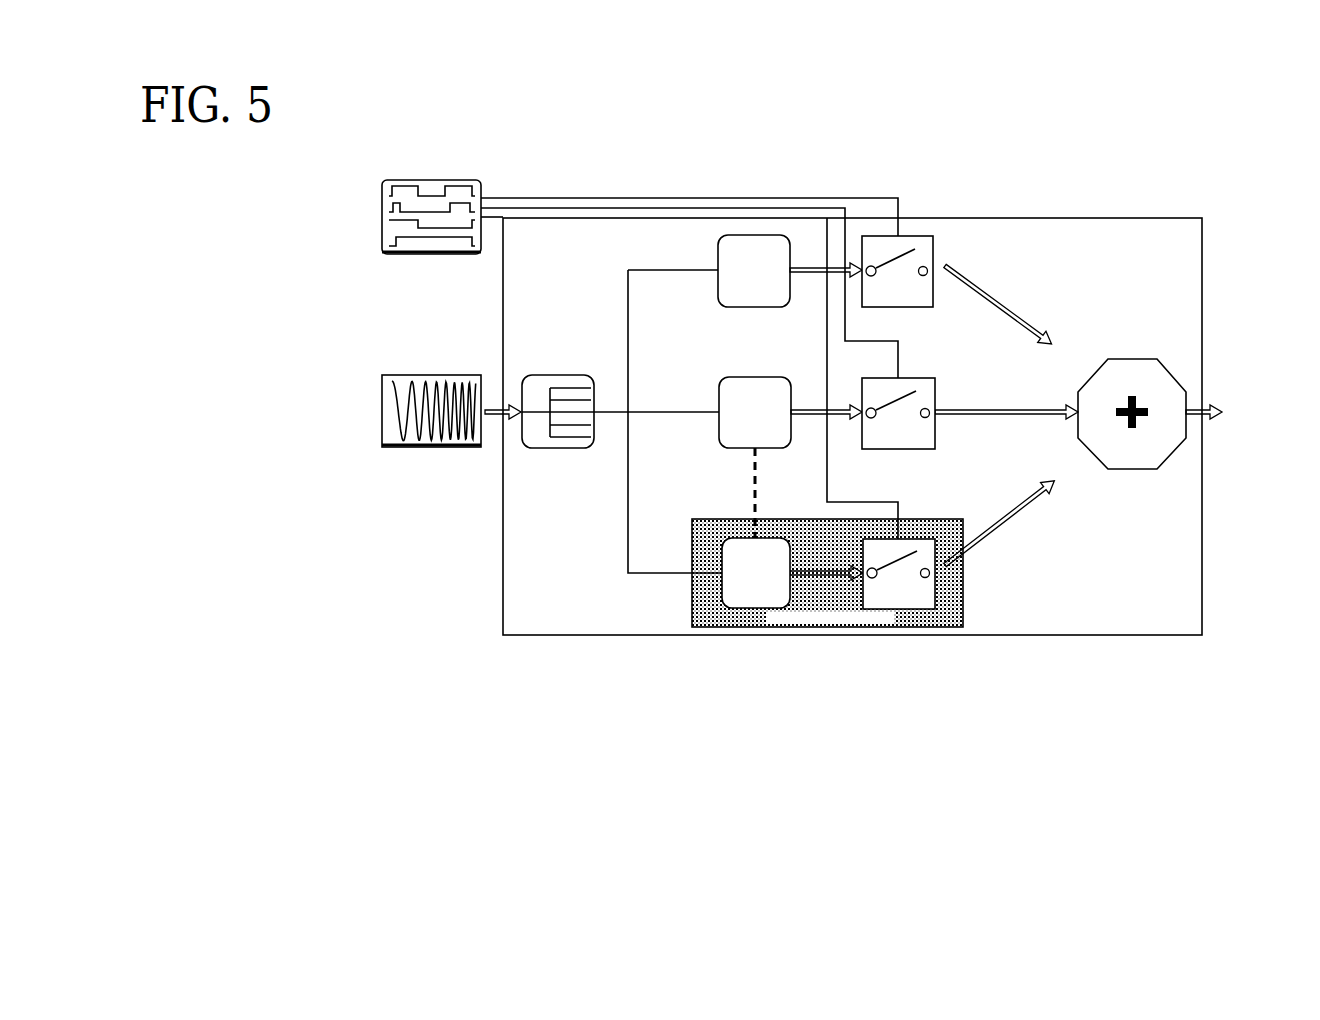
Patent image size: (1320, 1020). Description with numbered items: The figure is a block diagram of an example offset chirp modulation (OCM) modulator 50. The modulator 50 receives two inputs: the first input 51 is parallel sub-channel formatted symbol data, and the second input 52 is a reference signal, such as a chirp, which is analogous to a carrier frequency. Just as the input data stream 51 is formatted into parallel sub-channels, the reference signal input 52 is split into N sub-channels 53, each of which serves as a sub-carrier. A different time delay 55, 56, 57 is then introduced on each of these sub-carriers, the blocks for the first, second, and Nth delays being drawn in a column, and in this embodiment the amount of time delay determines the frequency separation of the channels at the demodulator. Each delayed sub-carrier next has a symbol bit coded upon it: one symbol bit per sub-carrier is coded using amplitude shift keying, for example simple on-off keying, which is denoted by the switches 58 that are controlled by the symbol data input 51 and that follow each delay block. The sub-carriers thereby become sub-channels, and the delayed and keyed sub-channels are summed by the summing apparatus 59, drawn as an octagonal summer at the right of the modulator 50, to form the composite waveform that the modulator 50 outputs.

The modulator 50 is at (729, 218).
The input 51 is at (430, 182).
The input 52 is at (380, 430).
The sub-channels 53 is at (545, 447).
The time delay 55 is at (728, 307).
The time delay 56 is at (722, 448).
The time delay 57 is at (733, 606).
The switches 58 is at (912, 540).
The summing apparatus 59 is at (1163, 373).